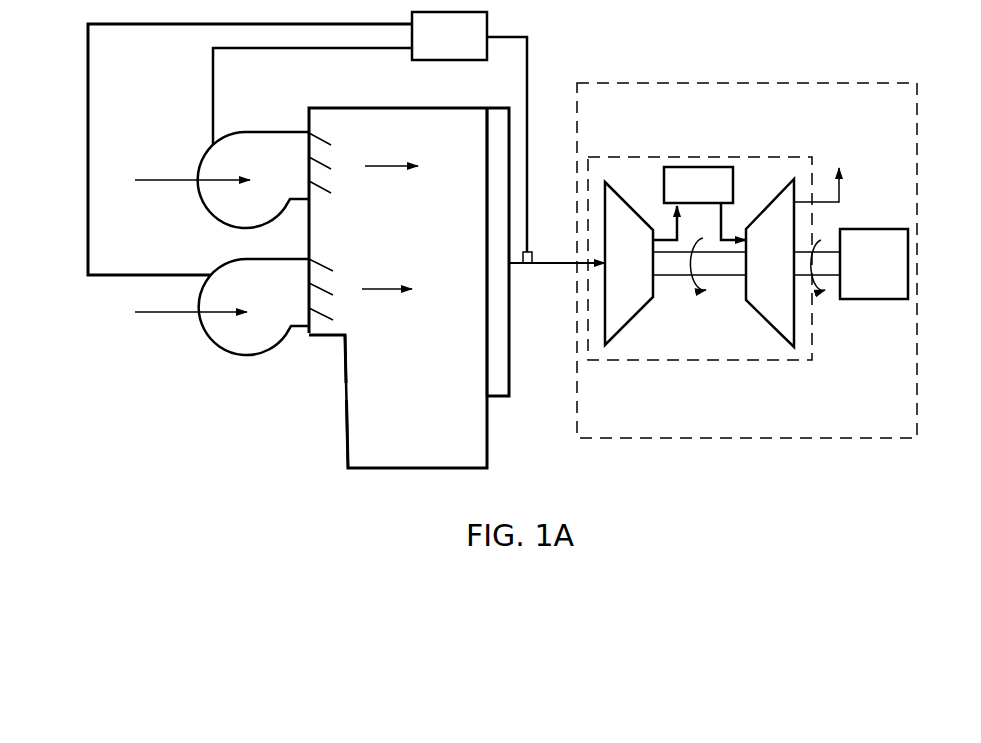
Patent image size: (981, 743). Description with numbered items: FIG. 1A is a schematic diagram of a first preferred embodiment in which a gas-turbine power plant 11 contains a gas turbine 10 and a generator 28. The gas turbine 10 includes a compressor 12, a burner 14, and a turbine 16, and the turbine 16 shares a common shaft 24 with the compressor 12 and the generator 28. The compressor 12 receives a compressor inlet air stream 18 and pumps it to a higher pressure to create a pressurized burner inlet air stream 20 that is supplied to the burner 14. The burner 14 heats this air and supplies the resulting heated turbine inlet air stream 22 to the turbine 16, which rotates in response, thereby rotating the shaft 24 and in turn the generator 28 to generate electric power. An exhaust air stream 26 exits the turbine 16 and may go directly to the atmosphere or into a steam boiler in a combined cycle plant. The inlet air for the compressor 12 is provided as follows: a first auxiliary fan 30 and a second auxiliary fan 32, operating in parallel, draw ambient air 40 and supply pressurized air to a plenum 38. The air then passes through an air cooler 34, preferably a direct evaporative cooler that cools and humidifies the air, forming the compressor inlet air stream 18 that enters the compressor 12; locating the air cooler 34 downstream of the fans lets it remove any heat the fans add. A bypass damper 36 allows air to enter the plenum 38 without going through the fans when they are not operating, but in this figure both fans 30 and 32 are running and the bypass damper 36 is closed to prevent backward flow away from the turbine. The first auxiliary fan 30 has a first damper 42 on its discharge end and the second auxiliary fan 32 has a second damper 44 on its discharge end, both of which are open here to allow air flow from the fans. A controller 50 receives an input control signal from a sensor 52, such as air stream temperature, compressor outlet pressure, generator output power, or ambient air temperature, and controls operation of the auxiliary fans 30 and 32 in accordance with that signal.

The gas turbine 10 is at (757, 157).
The gas-turbine power plant 11 is at (808, 442).
The compressor 12 is at (626, 318).
The burner 14 is at (706, 167).
The turbine 16 is at (773, 304).
The compressor inlet air stream 18 is at (556, 262).
The pressurized burner inlet air stream 20 is at (666, 238).
The heated turbine inlet air stream 22 is at (722, 236).
The common shaft 24 is at (673, 272).
The exhaust air stream 26 is at (843, 190).
The generator 28 is at (861, 280).
The first auxiliary fan 30 is at (262, 140).
The second auxiliary fan 32 is at (248, 352).
The air cooler 34 is at (503, 120).
The bypass damper 36 is at (349, 401).
The plenum 38 is at (455, 237).
The ambient air 40 is at (169, 247).
The first damper 42 is at (323, 166).
The second damper 44 is at (323, 290).
The controller 50 is at (436, 55).
The sensor 52 is at (532, 264).